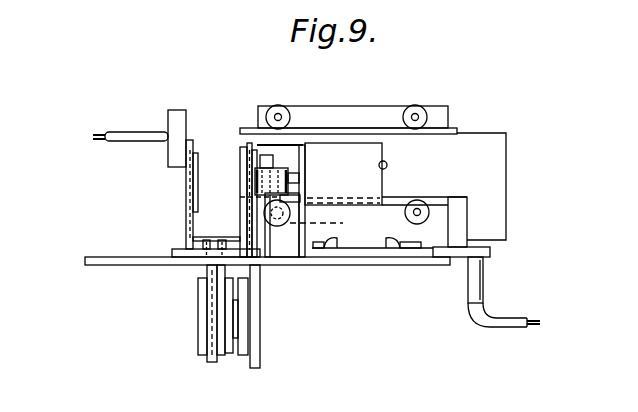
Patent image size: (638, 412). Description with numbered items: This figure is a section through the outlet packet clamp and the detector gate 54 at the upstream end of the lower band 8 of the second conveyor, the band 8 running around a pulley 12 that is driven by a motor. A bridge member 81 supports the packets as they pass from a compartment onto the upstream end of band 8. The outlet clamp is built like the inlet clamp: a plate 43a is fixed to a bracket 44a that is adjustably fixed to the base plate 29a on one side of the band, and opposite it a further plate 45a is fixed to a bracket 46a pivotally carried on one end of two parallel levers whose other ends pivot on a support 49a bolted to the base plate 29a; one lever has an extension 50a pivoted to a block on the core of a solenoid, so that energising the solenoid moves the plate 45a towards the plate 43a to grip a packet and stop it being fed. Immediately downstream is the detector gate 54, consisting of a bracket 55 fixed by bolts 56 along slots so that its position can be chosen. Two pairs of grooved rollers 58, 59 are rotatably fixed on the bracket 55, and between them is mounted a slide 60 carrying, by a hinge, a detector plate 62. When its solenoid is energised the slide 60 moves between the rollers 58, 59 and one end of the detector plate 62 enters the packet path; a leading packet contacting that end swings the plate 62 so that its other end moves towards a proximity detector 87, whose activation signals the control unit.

The lower endless band 8 is at (213, 288).
The pulley 12 is at (208, 337).
The base plate 29a is at (395, 265).
The plate 43a is at (197, 172).
The bracket 44a is at (187, 198).
The plate 45a is at (243, 157).
The bracket 46a is at (255, 258).
The support 49a is at (288, 252).
The extension 50a is at (297, 170).
The detector gate 54 is at (458, 114).
The bracket 55 is at (438, 242).
The bolts 56 is at (386, 240).
The grooved rollers 58 is at (280, 105).
The grooved rollers 59 is at (406, 209).
The slide 60 is at (490, 140).
The detector plate 62 is at (277, 147).
The bridge member 81 is at (202, 248).
The proximity detector 87 is at (485, 276).